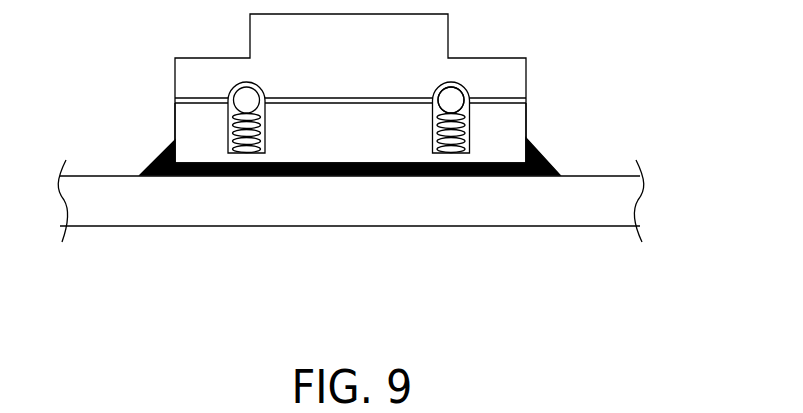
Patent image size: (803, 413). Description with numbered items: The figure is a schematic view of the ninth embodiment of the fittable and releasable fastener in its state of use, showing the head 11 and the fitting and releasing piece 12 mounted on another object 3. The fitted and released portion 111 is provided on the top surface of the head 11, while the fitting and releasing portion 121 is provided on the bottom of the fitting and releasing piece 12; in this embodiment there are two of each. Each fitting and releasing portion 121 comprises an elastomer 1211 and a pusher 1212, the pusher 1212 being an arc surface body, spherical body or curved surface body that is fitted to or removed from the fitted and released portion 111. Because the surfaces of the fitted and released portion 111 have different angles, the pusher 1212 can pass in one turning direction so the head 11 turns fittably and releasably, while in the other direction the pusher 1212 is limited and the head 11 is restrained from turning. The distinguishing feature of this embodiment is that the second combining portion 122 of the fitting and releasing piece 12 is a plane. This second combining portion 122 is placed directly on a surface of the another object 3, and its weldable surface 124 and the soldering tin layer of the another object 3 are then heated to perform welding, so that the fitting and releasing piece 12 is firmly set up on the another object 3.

The another object 3 is at (136, 200).
The head 11 is at (507, 77).
The fitting and releasing piece 12 is at (497, 130).
The fitted and released portion 111 is at (453, 83).
The fitting and releasing portion 121 is at (420, 168).
The elastomer 1211 is at (450, 150).
The pusher 1212 is at (455, 106).
The second combining portion 122 is at (355, 176).
The weldable surface 124 is at (232, 177).